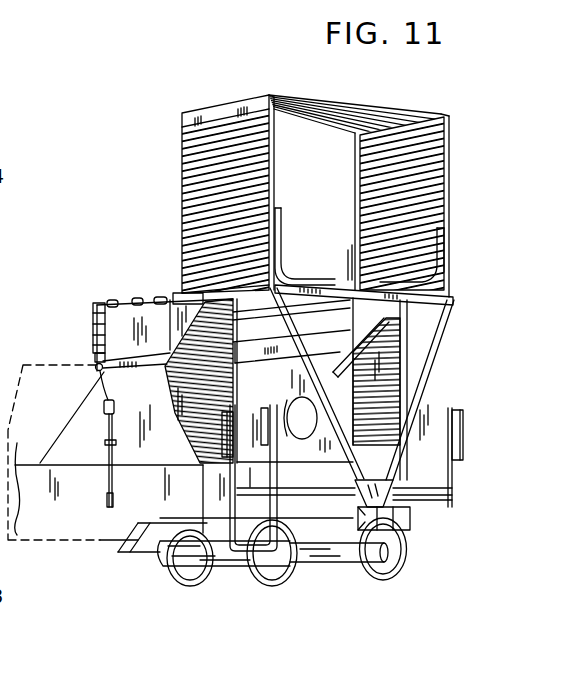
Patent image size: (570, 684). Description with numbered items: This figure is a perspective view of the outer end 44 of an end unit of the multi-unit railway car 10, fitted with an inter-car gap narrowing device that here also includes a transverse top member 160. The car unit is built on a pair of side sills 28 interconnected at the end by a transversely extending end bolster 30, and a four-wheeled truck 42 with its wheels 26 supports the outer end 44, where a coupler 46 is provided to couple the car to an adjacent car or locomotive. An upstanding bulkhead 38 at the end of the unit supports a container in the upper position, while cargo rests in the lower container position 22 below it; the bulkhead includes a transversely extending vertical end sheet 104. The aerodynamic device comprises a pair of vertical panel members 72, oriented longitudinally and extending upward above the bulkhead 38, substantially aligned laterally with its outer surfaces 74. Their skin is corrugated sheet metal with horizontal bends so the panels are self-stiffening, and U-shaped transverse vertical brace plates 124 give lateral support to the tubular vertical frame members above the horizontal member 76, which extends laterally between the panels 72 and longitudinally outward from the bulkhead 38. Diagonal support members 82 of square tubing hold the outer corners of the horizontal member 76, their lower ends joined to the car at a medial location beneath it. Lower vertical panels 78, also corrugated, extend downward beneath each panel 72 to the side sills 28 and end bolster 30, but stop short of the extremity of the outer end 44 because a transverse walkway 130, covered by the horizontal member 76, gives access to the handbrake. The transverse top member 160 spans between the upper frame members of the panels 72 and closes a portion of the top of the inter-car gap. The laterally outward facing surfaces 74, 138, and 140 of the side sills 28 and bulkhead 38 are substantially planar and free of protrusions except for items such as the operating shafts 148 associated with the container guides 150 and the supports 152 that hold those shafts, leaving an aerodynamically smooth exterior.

The multi-unit railway car 10 is at (290, 80).
The vertical panel members 72 is at (221, 137).
The transverse top member 160 is at (335, 107).
The U-shaped transverse vertical brace plates 124 is at (280, 233).
The horizontal member 76 is at (326, 287).
The vertical end sheet 104 is at (241, 338).
The lower vertical panels 78 is at (218, 378).
The diagonal support members 82 is at (443, 360).
The outer surfaces of the bulkhead 74 is at (108, 331).
The container guides 150 is at (94, 322).
The supports 152 is at (128, 418).
The operating shafts 148 is at (114, 480).
The lower container position 22 is at (40, 362).
The bulkhead structure 38 is at (77, 433).
The laterally outwardly facing surface 138 is at (183, 448).
The side sills 28 is at (28, 478).
The laterally outwardly facing surface 140 is at (13, 516).
The transverse walkway 130 is at (420, 488).
The outer end 44 is at (408, 524).
The coupler 46 is at (395, 534).
The four-wheeled truck 42 is at (333, 557).
The end bolster 30 is at (216, 530).
The wheels 26 is at (189, 588).